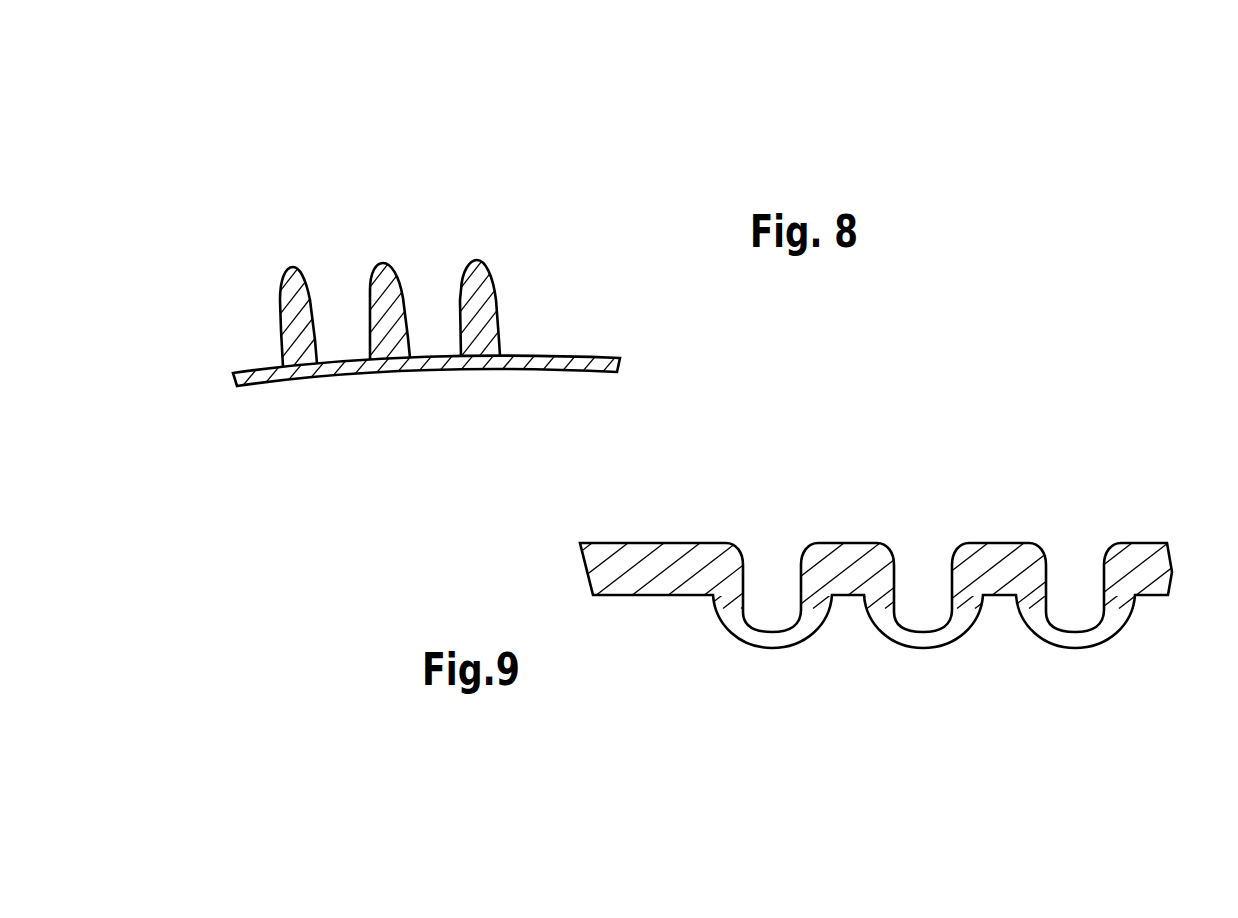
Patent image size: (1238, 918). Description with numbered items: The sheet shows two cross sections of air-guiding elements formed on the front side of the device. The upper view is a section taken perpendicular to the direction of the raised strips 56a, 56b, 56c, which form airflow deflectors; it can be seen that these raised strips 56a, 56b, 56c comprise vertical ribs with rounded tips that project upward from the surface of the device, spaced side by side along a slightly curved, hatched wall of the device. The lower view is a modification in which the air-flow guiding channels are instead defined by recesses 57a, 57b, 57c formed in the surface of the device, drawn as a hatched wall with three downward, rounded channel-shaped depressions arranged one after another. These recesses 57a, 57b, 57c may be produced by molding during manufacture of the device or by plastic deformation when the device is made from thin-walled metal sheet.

In FIG. 8, the raised strip 56a is at (292, 266).
In FIG. 8, the raised strip 56b is at (400, 278).
In FIG. 8, the raised strip 56c is at (492, 274).
In FIG. 9, the recess 57a is at (778, 595).
In FIG. 9, the recess 57b is at (927, 578).
In FIG. 9, the recess 57c is at (1075, 603).